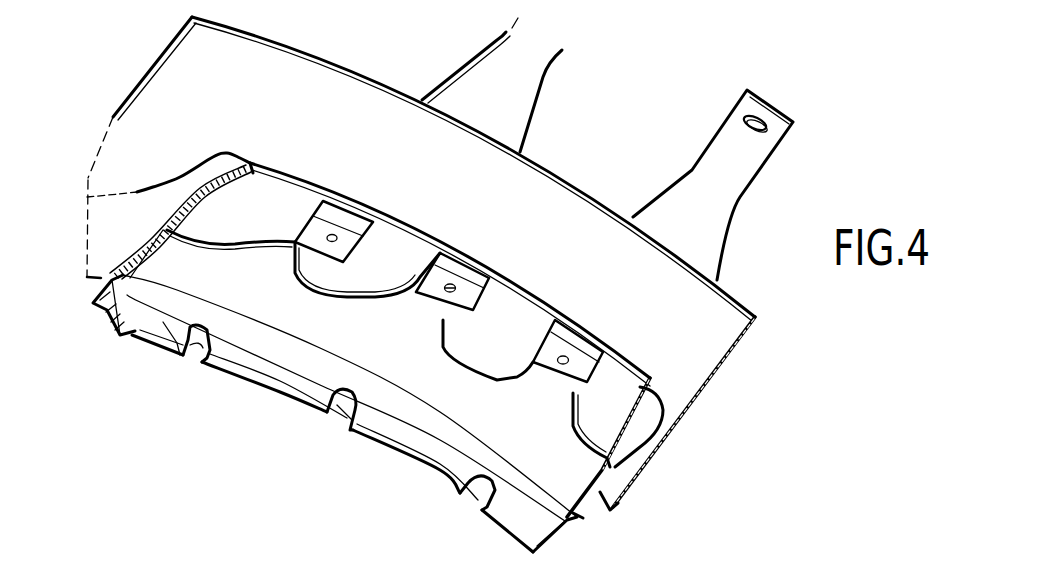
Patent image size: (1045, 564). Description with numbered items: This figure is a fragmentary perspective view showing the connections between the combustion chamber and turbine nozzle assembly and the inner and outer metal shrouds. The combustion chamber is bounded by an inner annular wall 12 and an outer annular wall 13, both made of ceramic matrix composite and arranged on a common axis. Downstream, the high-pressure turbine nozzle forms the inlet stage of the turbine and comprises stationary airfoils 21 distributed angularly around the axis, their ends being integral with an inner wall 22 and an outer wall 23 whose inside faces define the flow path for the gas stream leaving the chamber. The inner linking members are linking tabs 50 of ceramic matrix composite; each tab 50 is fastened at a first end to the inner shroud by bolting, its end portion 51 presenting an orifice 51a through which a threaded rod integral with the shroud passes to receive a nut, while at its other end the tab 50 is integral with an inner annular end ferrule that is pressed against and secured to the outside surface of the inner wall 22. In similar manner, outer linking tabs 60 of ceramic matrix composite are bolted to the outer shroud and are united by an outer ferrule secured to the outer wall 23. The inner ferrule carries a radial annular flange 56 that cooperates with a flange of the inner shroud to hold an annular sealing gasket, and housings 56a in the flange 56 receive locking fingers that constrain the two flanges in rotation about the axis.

The inner annular wall 12 is at (275, 193).
The outer annular wall 13 is at (698, 330).
The airfoils 21 is at (162, 202).
The inner wall 22 is at (130, 240).
The outer wall 23 is at (643, 450).
The linking tabs 50 is at (577, 467).
The end portions 51 is at (597, 378).
The orifices 51a is at (560, 360).
The radial annular flange 56 is at (180, 352).
The housings 56a is at (338, 408).
The linking tabs 60 is at (703, 183).